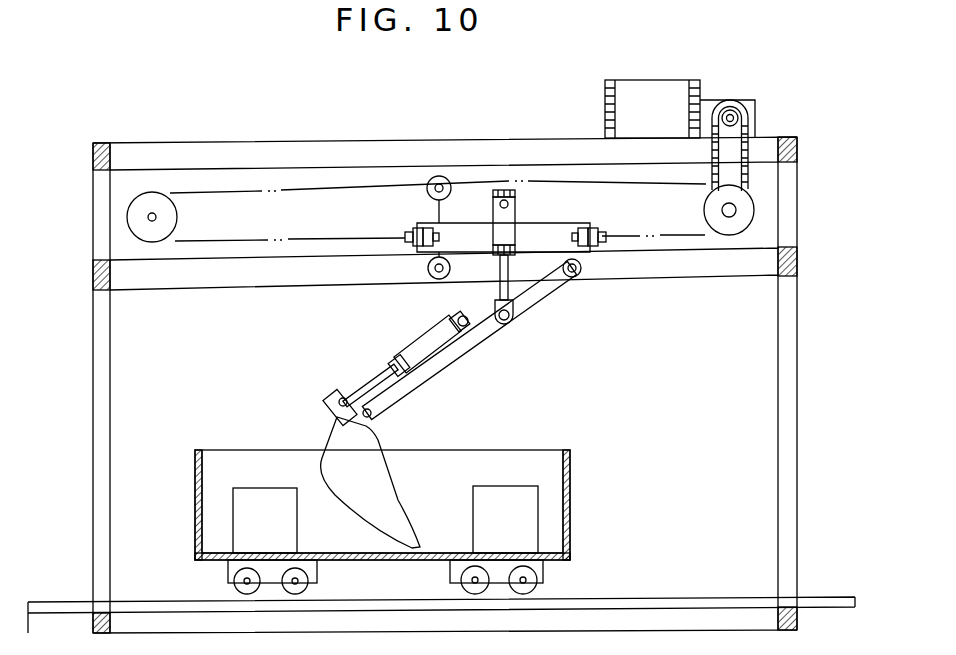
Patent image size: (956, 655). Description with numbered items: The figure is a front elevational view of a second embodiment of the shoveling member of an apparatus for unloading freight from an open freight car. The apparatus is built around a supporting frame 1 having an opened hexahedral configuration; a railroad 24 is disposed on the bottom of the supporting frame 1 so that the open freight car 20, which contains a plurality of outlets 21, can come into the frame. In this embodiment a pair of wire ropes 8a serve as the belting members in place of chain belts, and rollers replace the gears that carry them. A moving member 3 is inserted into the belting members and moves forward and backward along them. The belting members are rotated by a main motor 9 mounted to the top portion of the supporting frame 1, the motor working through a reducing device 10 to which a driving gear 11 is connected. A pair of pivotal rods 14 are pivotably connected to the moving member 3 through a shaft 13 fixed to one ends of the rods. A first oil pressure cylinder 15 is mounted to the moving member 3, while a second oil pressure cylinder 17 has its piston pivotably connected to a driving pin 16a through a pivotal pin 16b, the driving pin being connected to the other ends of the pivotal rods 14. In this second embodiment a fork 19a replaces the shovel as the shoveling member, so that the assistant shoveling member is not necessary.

The supporting frame 1 is at (788, 393).
The moving member 3 is at (548, 236).
The wire ropes 8a is at (217, 187).
The main motor 9 is at (652, 93).
The reducing device 10 is at (708, 107).
The driving gear 11 is at (747, 108).
The shaft 13 is at (576, 278).
The pivotal rods 14 is at (540, 288).
The first oil pressure cylinder 15 is at (497, 212).
The driving pin 16a is at (337, 421).
The pivotal pin 16b is at (352, 398).
The second oil pressure cylinder 17 is at (428, 350).
The fork 19a is at (380, 495).
The open freight car 20 is at (555, 478).
The outlets 21 is at (540, 517).
The railroad 24 is at (628, 603).